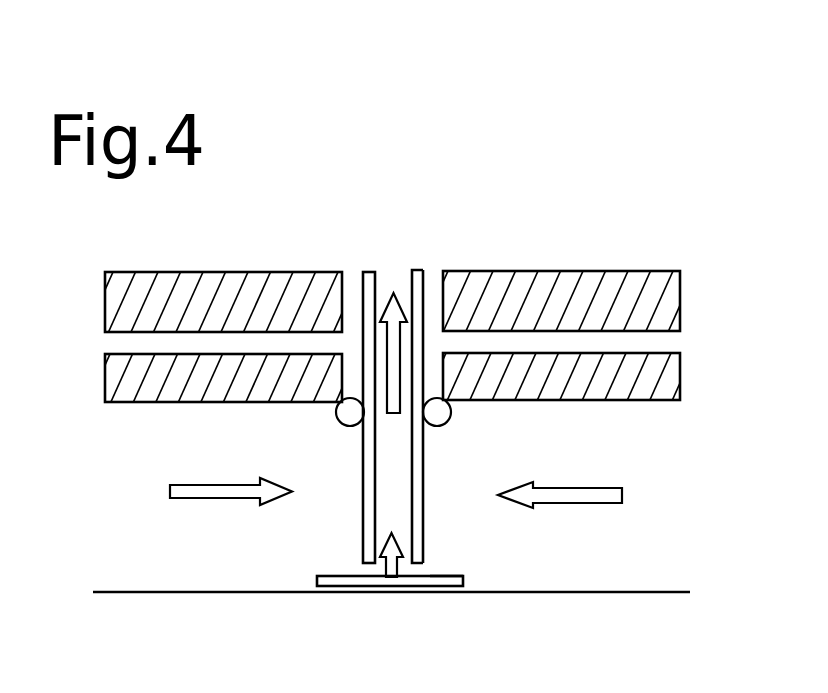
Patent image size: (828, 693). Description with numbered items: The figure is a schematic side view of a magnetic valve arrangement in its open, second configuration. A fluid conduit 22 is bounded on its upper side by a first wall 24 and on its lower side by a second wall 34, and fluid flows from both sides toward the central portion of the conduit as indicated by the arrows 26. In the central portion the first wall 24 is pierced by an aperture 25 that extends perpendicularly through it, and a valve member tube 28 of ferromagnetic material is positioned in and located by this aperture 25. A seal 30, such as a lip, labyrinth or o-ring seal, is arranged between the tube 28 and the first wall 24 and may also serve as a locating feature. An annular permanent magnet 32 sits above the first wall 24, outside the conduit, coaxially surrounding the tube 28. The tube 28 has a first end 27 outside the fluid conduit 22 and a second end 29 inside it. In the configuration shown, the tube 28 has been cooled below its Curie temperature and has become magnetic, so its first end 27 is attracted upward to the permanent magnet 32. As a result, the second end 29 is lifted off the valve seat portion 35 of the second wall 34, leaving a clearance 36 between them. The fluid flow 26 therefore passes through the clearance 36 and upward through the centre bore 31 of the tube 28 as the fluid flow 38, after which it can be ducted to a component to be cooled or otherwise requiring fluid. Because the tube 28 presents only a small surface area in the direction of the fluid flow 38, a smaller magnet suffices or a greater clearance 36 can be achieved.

The fluid conduit 22 is at (185, 557).
The first wall 24 is at (107, 400).
The aperture 25 is at (337, 390).
The arrows 26 is at (222, 488).
The first end 27 is at (423, 282).
The valve member tube 28 is at (423, 512).
The second end 29 is at (423, 555).
The seal 30 is at (450, 417).
The centre bore 31 is at (387, 487).
The permanent magnet 32 is at (520, 278).
The second wall 34 is at (593, 592).
The valve seat portion 35 is at (393, 593).
The clearance 36 is at (363, 571).
The fluid flow 38 is at (390, 287).